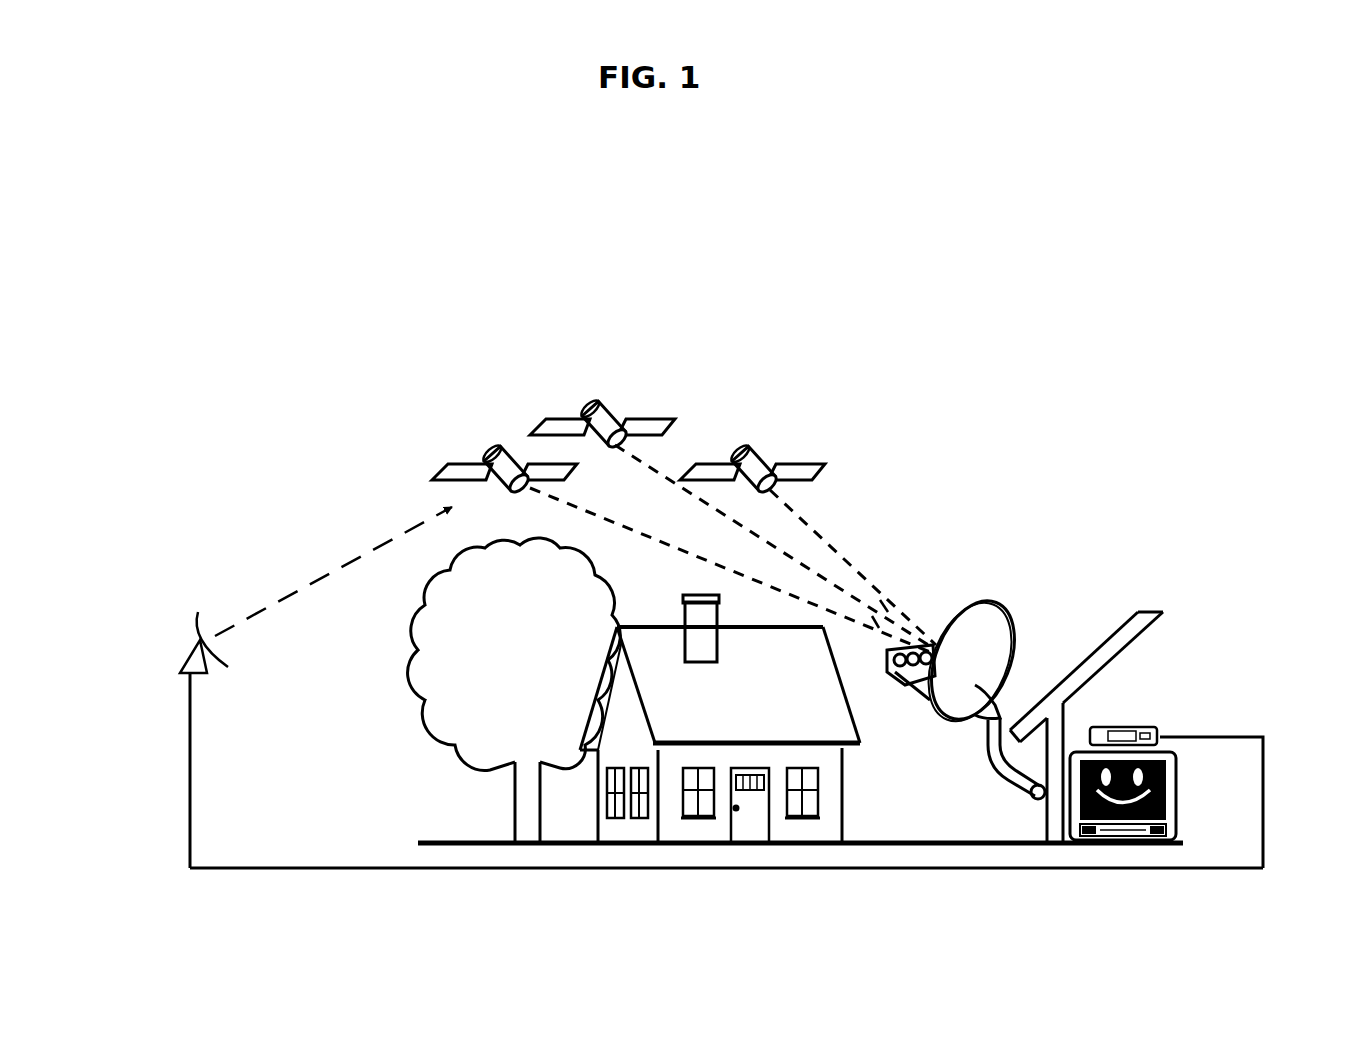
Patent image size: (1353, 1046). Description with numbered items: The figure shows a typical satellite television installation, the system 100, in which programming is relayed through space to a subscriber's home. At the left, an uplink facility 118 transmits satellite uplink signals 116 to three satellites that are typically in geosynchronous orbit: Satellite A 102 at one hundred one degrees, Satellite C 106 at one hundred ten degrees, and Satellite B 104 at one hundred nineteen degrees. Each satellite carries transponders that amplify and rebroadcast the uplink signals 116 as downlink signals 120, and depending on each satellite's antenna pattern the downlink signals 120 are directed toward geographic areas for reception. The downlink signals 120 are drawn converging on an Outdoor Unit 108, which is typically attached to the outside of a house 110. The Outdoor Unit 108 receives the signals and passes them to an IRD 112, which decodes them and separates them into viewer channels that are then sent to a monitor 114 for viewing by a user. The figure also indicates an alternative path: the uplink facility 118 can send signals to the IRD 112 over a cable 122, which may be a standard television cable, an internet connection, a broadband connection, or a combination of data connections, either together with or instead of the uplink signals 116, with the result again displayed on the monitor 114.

The system 100 is at (796, 226).
The Satellite A 102 is at (474, 452).
The Satellite B 104 is at (757, 444).
The Satellite C 106 is at (660, 409).
The Outdoor Unit (ODU) 108 is at (988, 593).
The house 110 is at (1105, 625).
The IRD 112 is at (1122, 723).
The monitor 114 is at (1177, 780).
The satellite uplink signals 116 is at (288, 580).
The uplink facility 118 is at (186, 646).
The downlink signals 120 is at (852, 552).
The cable 122 is at (1217, 727).